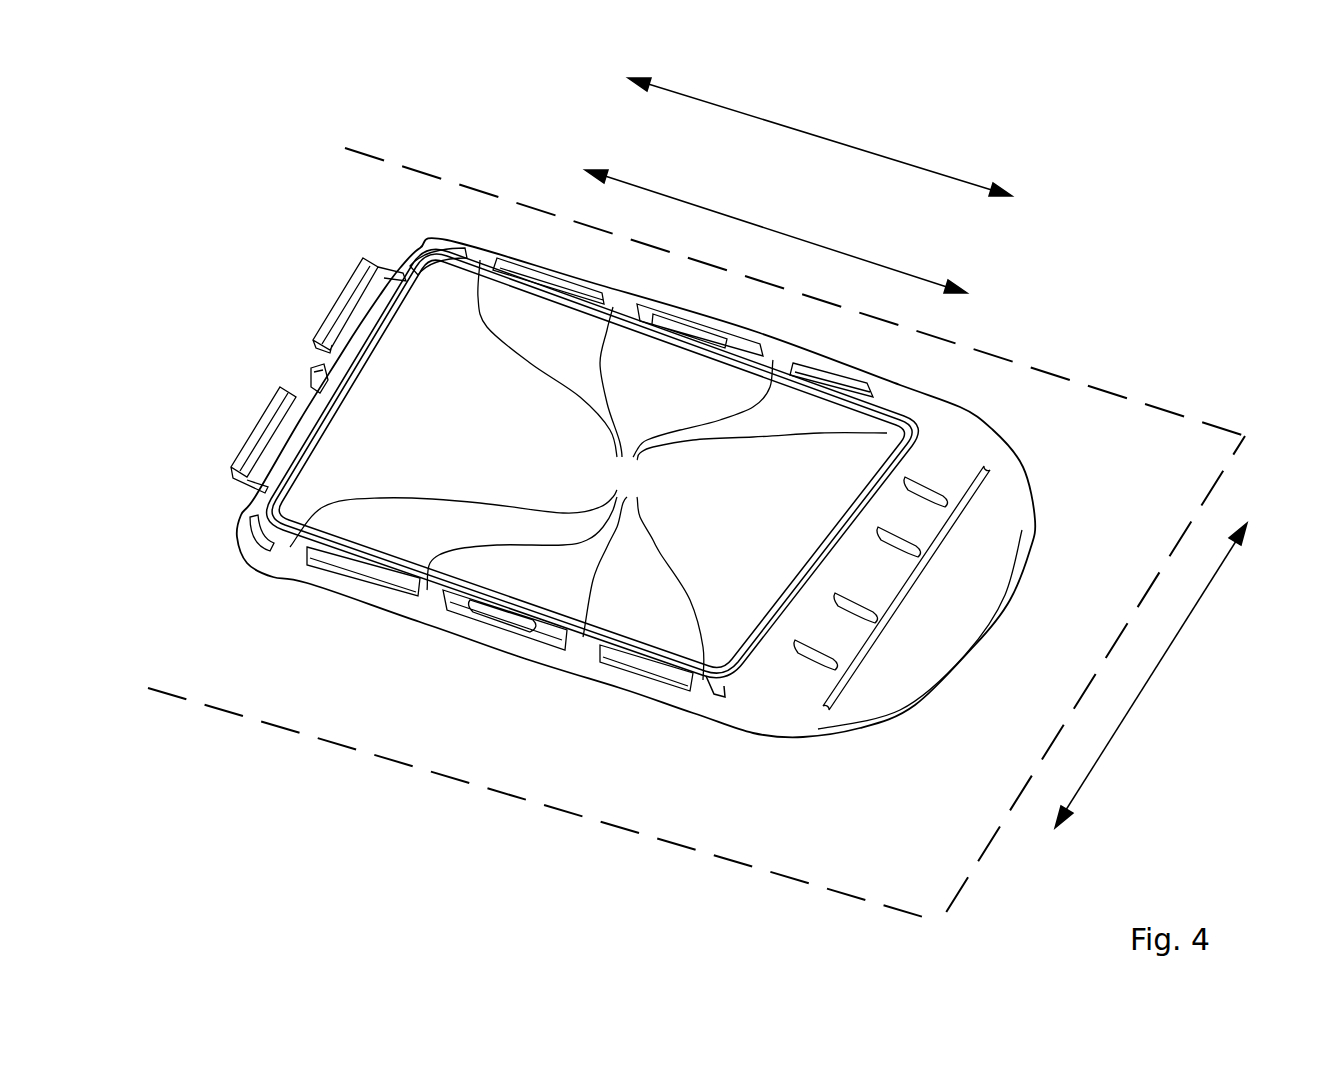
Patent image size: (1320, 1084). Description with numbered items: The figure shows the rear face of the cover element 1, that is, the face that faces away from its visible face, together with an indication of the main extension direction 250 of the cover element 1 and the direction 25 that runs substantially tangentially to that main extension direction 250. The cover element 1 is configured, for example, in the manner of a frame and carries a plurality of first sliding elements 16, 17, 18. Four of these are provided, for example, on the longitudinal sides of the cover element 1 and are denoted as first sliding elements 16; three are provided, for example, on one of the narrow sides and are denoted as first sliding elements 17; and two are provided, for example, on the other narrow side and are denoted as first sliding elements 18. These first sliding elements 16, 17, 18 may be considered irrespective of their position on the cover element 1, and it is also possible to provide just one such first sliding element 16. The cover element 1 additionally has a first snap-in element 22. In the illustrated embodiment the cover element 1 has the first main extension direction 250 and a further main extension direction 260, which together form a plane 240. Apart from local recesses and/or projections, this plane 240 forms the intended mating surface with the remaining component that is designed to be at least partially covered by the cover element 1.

The cover element 1 is at (253, 560).
The first sliding elements 16 is at (588, 470).
The first sliding elements 17 is at (837, 632).
The first sliding elements 18 is at (340, 305).
The first snap-in element 22 is at (333, 387).
The direction 25 is at (750, 223).
The plane 240 is at (1137, 467).
The main extension direction 250 is at (873, 157).
The further main extension direction 260 is at (1120, 727).